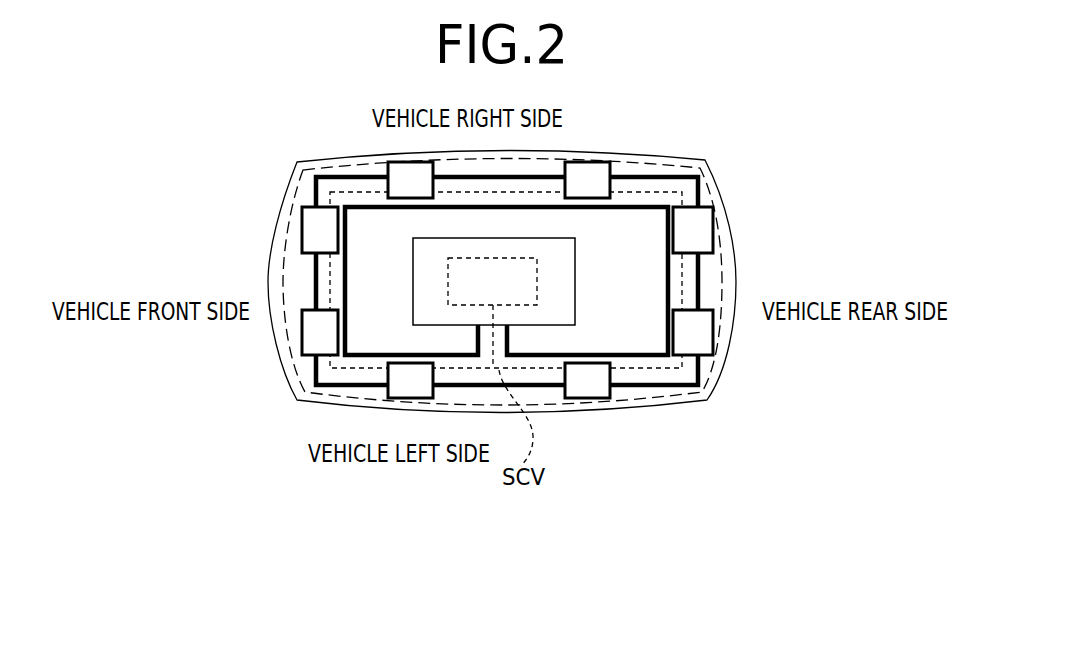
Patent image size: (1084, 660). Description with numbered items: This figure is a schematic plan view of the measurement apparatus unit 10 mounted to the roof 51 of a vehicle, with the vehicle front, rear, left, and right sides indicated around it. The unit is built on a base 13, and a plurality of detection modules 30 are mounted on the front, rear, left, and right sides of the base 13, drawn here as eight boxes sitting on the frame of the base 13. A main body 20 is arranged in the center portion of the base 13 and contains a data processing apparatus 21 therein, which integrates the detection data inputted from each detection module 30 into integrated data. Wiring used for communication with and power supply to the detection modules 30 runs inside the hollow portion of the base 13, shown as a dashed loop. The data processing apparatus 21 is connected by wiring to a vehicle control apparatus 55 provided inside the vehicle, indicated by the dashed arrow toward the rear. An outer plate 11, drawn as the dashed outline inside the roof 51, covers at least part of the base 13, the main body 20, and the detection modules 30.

The measurement apparatus unit 10 is at (692, 460).
The outer plate 11 is at (672, 162).
The base 13 is at (357, 176).
The main body 20 is at (443, 296).
The data processing apparatus 21 is at (503, 291).
The detection modules 30 is at (507, 280).
The roof 51 is at (617, 152).
The vehicle control apparatus 55 is at (537, 282).